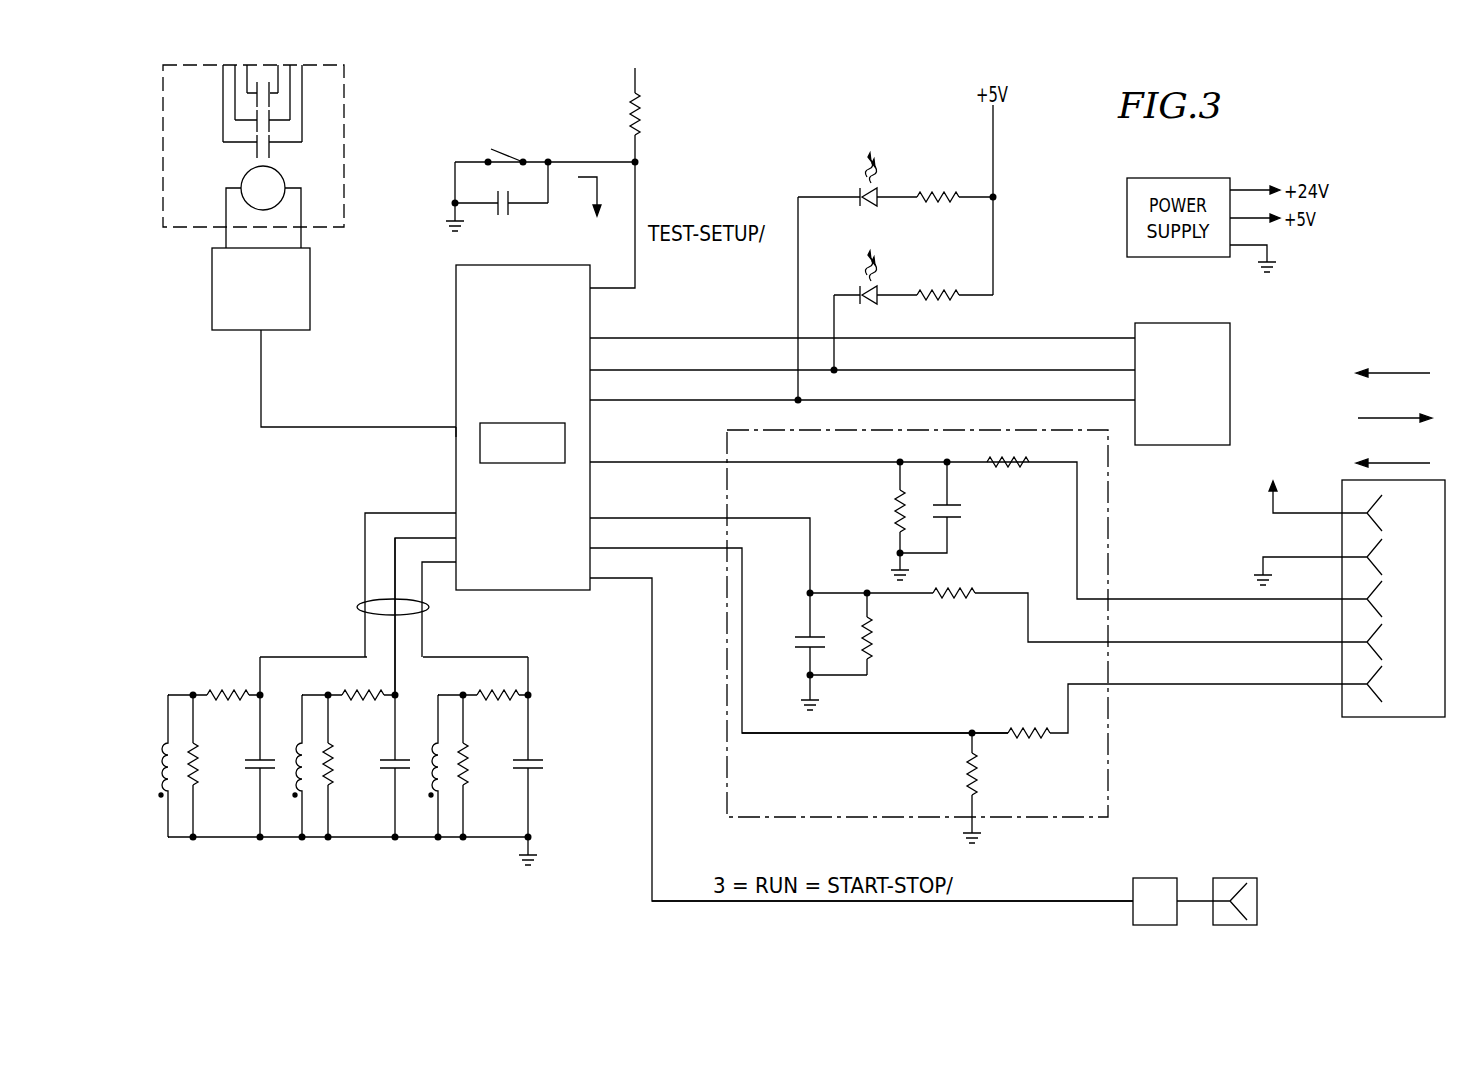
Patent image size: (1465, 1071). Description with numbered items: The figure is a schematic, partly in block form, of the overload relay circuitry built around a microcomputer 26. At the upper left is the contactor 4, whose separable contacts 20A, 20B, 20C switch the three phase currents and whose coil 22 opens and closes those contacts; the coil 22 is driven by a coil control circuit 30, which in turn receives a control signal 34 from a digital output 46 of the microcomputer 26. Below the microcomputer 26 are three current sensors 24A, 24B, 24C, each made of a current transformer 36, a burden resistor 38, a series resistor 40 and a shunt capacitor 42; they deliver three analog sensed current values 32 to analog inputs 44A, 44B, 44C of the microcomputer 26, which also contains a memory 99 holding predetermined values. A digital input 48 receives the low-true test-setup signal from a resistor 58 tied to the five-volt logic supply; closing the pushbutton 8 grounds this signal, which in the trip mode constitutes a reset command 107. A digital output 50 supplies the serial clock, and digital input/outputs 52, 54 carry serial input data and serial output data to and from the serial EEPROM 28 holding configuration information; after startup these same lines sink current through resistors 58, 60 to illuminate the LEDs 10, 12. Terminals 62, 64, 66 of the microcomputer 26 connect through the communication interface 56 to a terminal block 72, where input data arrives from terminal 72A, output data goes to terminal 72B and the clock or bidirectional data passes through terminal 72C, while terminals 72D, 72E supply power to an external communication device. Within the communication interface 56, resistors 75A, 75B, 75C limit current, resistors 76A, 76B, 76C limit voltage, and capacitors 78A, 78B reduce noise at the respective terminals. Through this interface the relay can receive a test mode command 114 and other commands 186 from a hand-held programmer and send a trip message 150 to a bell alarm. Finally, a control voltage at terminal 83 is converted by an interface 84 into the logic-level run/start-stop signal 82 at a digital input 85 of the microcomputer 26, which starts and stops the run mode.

The contactor 4 is at (344, 80).
The separable contact 20A is at (227, 146).
The separable contact 20B is at (237, 119).
The separable contact 20C is at (243, 92).
The coil 22 is at (283, 176).
The coil control circuit 30 is at (222, 330).
The control signal 34 is at (295, 427).
The microcomputer 26 is at (456, 335).
The memory 99 is at (510, 423).
The digital output 46 is at (456, 433).
The pushbutton 8 is at (490, 148).
The reset command 107 is at (597, 192).
The resistor 58 is at (642, 118).
The digital input 48 is at (591, 292).
The digital output 50 is at (591, 343).
The digital input/output 52 is at (591, 375).
The digital input/output 54 is at (591, 405).
The terminal 62 is at (591, 467).
The terminal 64 is at (591, 523).
The terminal 66 is at (591, 553).
The digital input 85 is at (591, 583).
The analog input 44A is at (456, 513).
The analog input 44B is at (456, 538).
The analog input 44C is at (456, 562).
The analog sensed current values 32 is at (358, 610).
The current transformer 36 is at (168, 748).
The burden resistor 38 is at (198, 770).
The series resistor 40 is at (240, 692).
The shunt capacitor 42 is at (256, 756).
The current sensor 24A is at (228, 820).
The current sensor 24B is at (363, 820).
The current sensor 24C is at (498, 820).
The LED 10 is at (878, 206).
The LED 12 is at (878, 304).
The resistor 60 is at (927, 289).
The EEPROM 28 is at (1185, 323).
The communication interface 56 is at (727, 800).
The resistor 75A is at (996, 470).
The resistor 75B is at (943, 605).
The resistor 75C is at (1018, 742).
The resistor 76A is at (898, 510).
The resistor 76B is at (871, 650).
The resistor 76C is at (967, 772).
The capacitor 78A is at (958, 517).
The capacitor 78B is at (805, 635).
The terminal block 72 is at (1360, 717).
The terminal 72A is at (1346, 603).
The terminal 72B is at (1346, 646).
The terminal 72C is at (1346, 690).
The terminal 72D is at (1342, 505).
The terminal 72E is at (1342, 550).
The other commands 186 is at (1390, 373).
The trip message 150 is at (1400, 418).
The test mode command 114 is at (1390, 463).
The signal 82 is at (1022, 901).
The interface 84 is at (1155, 878).
The terminal 83 is at (1250, 878).